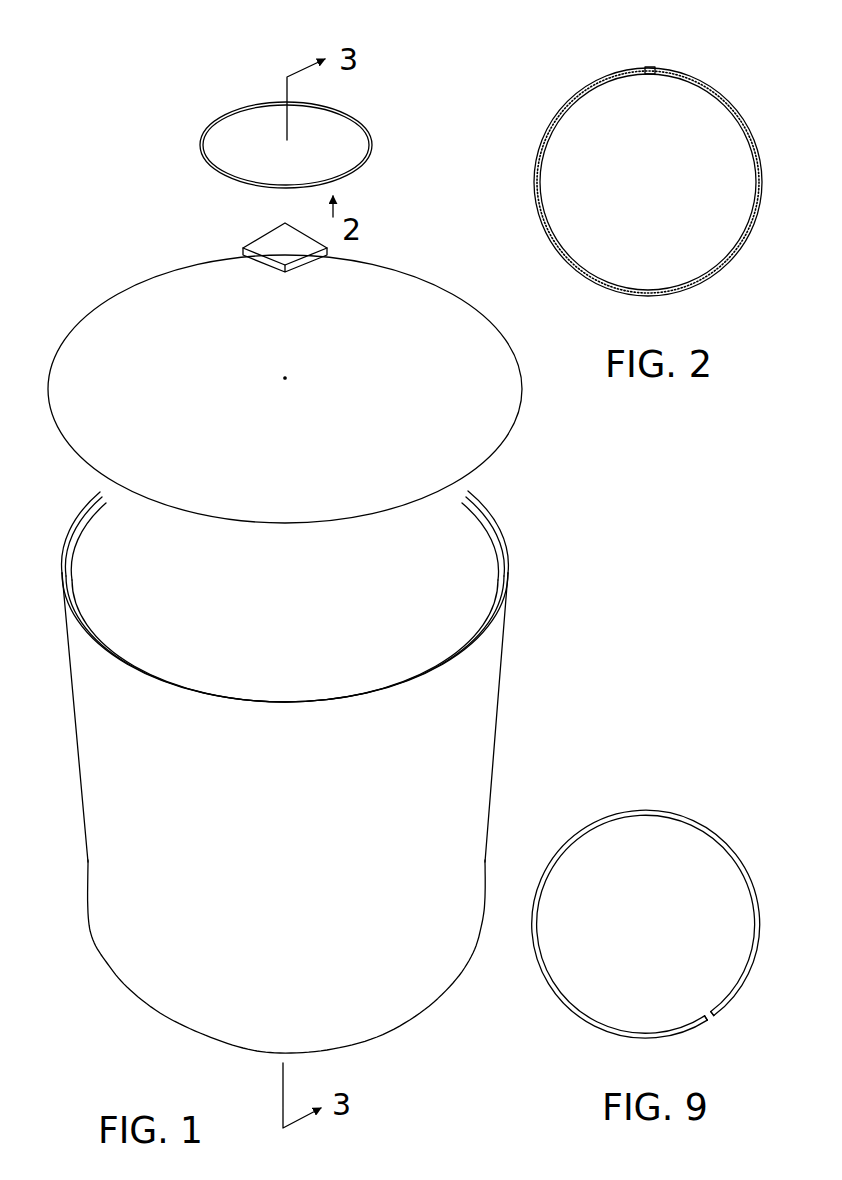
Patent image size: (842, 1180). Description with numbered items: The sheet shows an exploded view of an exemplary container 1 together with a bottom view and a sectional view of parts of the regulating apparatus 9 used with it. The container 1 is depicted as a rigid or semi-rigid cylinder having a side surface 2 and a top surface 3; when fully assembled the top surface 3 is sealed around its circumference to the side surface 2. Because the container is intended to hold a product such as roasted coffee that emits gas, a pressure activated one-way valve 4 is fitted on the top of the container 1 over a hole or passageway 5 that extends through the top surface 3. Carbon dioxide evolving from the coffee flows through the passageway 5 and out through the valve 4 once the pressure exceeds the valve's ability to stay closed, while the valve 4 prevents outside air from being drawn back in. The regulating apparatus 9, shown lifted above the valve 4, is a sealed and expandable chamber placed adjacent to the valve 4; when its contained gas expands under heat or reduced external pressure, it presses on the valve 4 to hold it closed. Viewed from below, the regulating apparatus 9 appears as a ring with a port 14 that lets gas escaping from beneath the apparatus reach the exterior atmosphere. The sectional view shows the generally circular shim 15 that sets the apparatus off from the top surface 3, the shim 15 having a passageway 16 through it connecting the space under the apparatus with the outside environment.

In FIG. 1, the container 1 is at (319, 573).
In FIG. 1, the side surface 2 is at (470, 772).
In FIG. 1, the top surface 3 is at (488, 420).
In FIG. 1, the pressure activated one-way valve 4 is at (293, 252).
In FIG. 1, the hole or passageway 5 is at (285, 378).
In FIG. 1, the regulating apparatus 9 is at (345, 137).
In FIG. 2, the regulating apparatus 9 is at (715, 243).
In FIG. 2, the port 14 is at (650, 67).
In FIG. 9, the shim 15 is at (677, 813).
In FIG. 9, the passageway 16 is at (715, 1020).